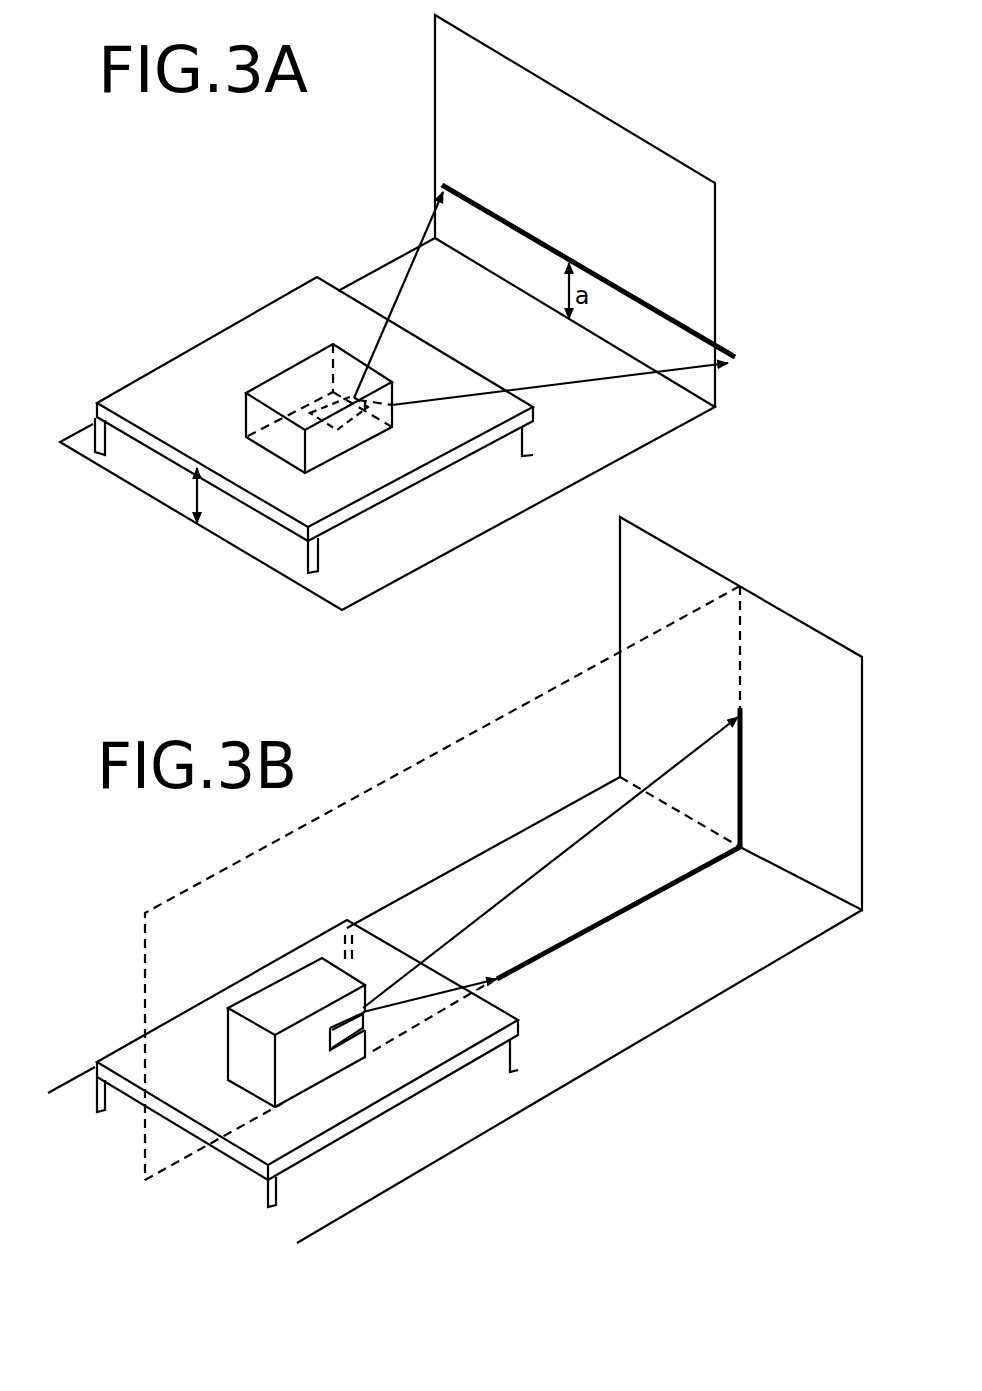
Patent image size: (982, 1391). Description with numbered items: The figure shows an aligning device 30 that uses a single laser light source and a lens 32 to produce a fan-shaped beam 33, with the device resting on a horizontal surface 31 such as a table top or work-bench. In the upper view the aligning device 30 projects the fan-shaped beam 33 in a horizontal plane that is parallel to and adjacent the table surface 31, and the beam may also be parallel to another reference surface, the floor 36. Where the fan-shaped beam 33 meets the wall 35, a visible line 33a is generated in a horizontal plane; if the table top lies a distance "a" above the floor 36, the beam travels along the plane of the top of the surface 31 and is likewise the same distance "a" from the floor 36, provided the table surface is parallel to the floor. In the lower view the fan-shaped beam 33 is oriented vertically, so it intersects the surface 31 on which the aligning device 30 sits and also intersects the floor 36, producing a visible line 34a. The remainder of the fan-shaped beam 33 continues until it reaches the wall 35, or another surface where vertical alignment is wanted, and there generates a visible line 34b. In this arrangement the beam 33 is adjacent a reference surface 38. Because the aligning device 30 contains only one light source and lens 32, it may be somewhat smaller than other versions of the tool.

In FIG. 3A, the aligning device 30 is at (298, 364).
In FIG. 3B, the aligning device 30 is at (280, 995).
In FIG. 3A, the surface 31 is at (535, 412).
In FIG. 3B, the surface 31 is at (293, 1133).
In FIG. 3A, the lens 32 is at (358, 398).
In FIG. 3B, the lens 32 is at (342, 1035).
In FIG. 3A, the fan-shaped beam 33 is at (608, 360).
In FIG. 3B, the fan-shaped beam 33 is at (425, 992).
In FIG. 3A, the visible line 33a is at (618, 277).
In FIG. 3B, the visible line 34a is at (670, 887).
In FIG. 3B, the visible line 34b is at (745, 776).
In FIG. 3A, the wall 35 is at (718, 221).
In FIG. 3B, the wall 35 is at (790, 614).
In FIG. 3A, the floor 36 is at (588, 460).
In FIG. 3B, the floor 36 is at (700, 1040).
In FIG. 3B, the reference surface 38 is at (506, 708).